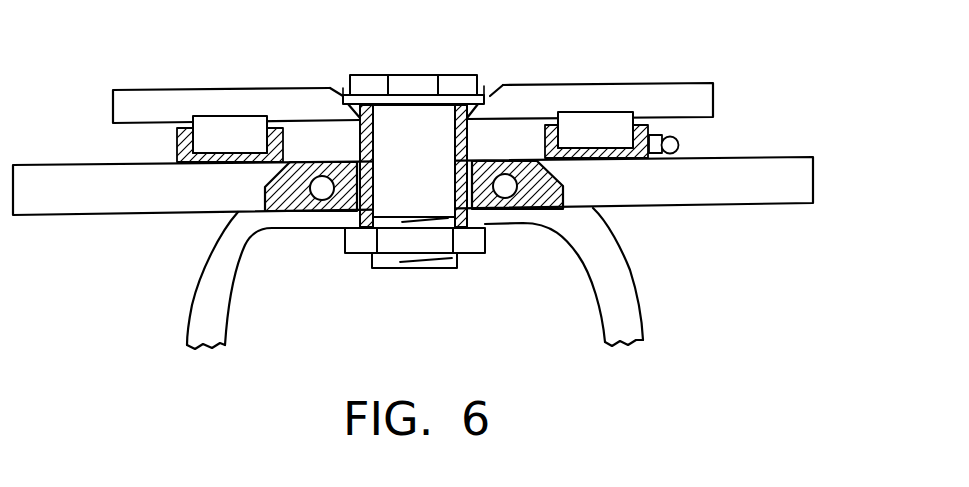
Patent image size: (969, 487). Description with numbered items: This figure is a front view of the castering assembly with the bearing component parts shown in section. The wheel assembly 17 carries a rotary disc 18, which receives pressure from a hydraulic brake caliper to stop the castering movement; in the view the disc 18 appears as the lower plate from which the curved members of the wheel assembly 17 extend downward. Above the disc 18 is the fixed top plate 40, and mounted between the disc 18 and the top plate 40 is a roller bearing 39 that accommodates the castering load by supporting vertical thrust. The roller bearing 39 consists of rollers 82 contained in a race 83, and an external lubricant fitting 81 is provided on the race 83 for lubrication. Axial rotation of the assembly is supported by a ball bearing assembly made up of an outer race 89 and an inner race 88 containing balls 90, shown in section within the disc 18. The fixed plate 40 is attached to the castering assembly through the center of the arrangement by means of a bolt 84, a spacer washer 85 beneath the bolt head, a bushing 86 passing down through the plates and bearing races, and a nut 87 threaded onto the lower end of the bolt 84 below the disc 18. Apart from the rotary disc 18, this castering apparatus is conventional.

The castering wheel assembly 17 is at (642, 302).
The disc 18 is at (817, 178).
The roller bearing 39 is at (177, 157).
The top plate 40 is at (692, 82).
The external lubricant fitting 81 is at (678, 142).
The rollers 82 is at (228, 125).
The race 83 is at (548, 125).
The bolt 84 is at (408, 74).
The spacer washer 85 is at (486, 98).
The bushing 86 is at (358, 106).
The nut 87 is at (487, 242).
The inner race 88 is at (353, 167).
The outer race 89 is at (267, 192).
The balls 90 is at (318, 196).